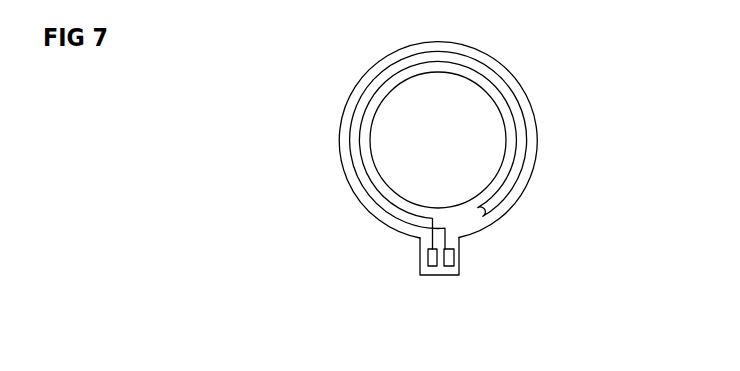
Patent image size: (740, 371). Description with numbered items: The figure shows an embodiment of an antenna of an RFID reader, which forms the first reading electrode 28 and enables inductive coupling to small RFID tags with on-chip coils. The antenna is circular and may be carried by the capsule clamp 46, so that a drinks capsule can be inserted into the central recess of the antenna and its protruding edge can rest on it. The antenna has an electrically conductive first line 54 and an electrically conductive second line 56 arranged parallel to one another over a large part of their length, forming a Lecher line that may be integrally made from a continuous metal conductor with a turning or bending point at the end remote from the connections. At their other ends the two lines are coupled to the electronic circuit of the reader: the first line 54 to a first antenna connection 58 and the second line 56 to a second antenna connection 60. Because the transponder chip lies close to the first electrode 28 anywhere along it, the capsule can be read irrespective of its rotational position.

The first reading electrode 28 is at (445, 159).
The capsule clamp 46 is at (342, 131).
The first line 54 is at (491, 81).
The second line 56 is at (531, 124).
The first antenna connection 58 is at (460, 265).
The second antenna connection 60 is at (420, 256).